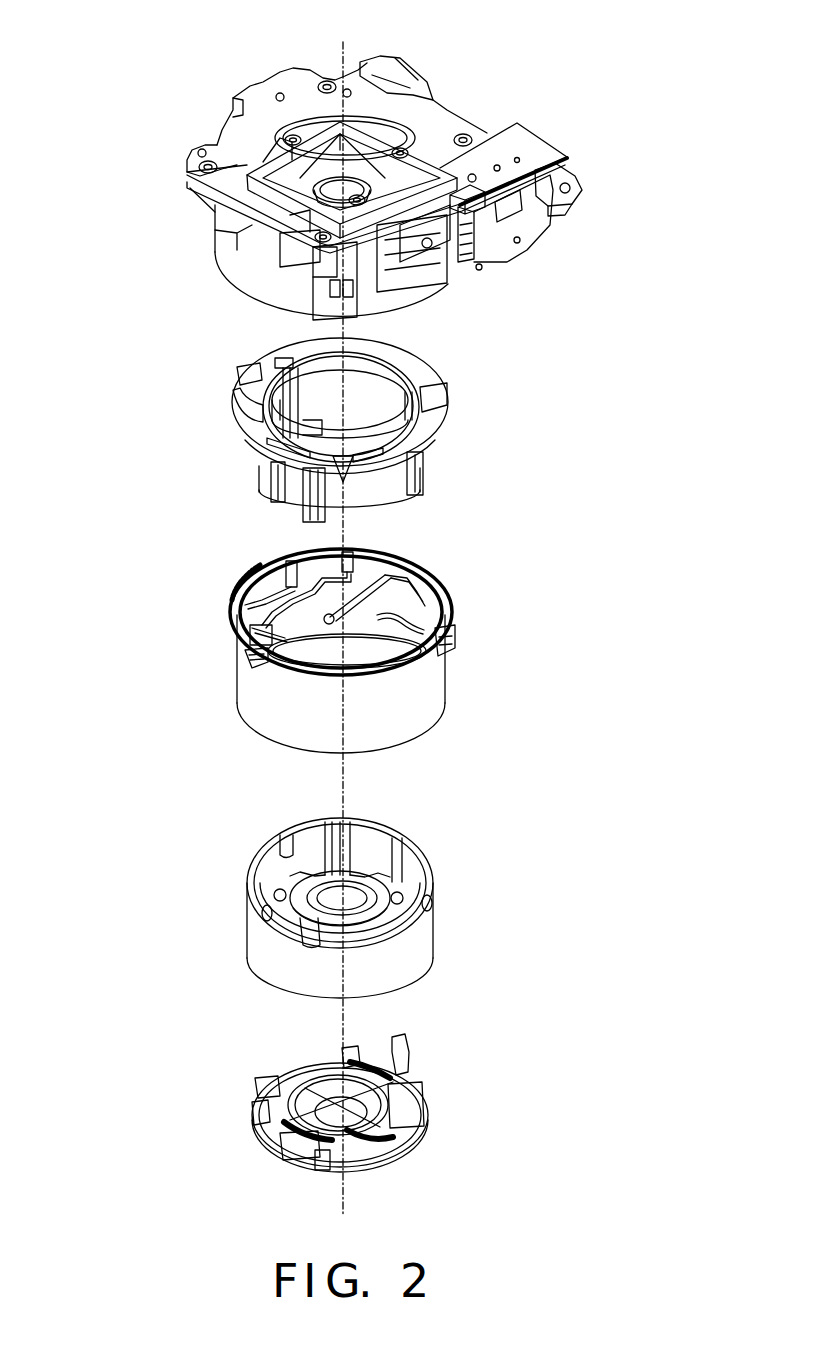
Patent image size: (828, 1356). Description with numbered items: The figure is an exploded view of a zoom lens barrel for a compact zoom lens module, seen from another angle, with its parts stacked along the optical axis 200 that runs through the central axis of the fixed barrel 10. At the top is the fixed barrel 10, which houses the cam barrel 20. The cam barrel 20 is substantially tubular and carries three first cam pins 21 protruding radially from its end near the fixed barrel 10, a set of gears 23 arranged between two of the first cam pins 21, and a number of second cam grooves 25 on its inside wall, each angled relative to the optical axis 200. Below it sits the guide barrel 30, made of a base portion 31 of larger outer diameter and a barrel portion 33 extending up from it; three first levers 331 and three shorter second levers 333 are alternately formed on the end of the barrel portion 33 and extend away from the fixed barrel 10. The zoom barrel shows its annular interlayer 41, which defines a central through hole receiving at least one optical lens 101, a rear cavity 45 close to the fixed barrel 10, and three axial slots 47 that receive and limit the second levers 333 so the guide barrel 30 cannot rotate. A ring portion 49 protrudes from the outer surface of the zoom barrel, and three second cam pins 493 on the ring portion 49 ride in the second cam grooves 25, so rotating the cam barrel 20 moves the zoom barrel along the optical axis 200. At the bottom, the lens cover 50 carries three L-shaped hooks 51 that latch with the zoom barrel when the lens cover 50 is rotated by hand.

The optical axis 200 is at (346, 612).
The fixed barrel 10 is at (545, 137).
The optical lens 101 is at (352, 188).
The cam barrel 20 is at (359, 643).
The first cam pin 21 is at (454, 656).
The gears 23 is at (228, 612).
The second cam groove 25 is at (397, 551).
The guide barrel 30 is at (377, 445).
The base portion 31 is at (430, 430).
The barrel portion 33 is at (390, 473).
The first lever 331 is at (307, 517).
The second lever 333 is at (270, 490).
The interlayer 41 is at (253, 877).
The rear cavity 45 is at (380, 850).
The axial slot 47 is at (313, 825).
The ring portion 49 is at (403, 923).
The second cam pin 493 is at (260, 920).
The lens cover 50 is at (389, 1103).
The L-shaped hook 51 is at (420, 1130).